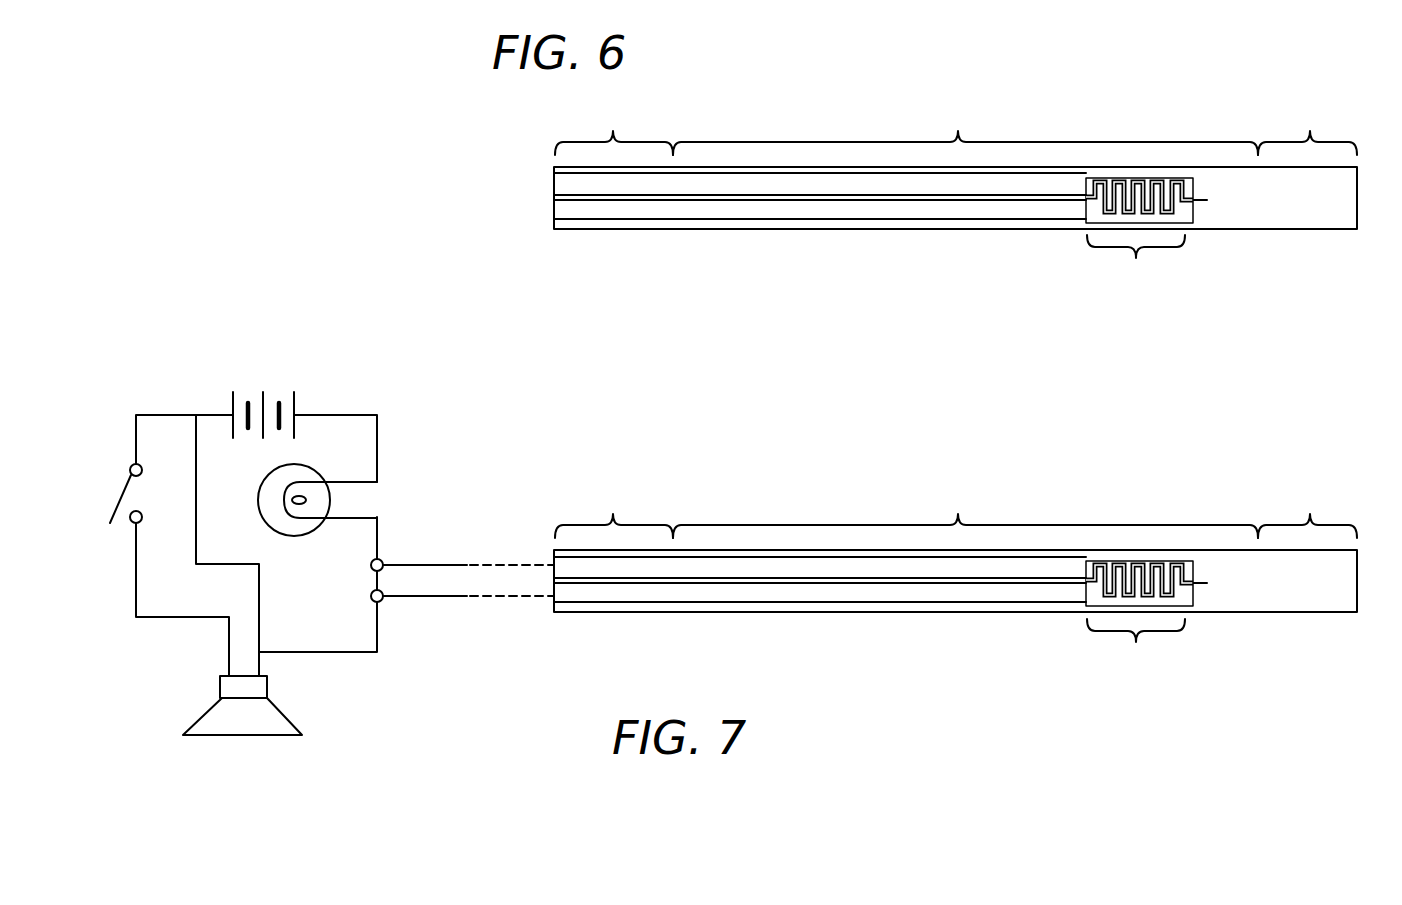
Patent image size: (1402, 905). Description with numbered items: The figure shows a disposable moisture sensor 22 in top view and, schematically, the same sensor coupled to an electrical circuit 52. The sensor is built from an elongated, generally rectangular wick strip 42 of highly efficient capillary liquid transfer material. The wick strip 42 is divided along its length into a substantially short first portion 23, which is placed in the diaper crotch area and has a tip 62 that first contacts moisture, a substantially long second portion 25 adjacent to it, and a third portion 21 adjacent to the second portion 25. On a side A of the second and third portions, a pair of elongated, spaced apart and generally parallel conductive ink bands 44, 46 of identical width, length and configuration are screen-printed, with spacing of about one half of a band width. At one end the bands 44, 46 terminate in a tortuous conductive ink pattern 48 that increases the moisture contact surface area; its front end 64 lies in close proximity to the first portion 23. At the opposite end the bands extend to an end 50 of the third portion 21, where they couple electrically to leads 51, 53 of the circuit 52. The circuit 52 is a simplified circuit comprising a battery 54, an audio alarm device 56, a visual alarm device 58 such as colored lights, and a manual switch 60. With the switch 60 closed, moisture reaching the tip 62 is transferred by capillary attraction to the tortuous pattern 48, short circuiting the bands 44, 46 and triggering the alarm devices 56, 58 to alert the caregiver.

In FIG. 6, the third portion 21 is at (614, 127).
In FIG. 7, the third portion 21 is at (614, 510).
In FIG. 6, the disposable moisture sensor 22 is at (1047, 108).
In FIG. 7, the disposable moisture sensor 22 is at (1046, 486).
In FIG. 6, the first portion 23 is at (1307, 128).
In FIG. 7, the first portion 23 is at (1307, 510).
In FIG. 6, the second portion 25 is at (965, 127).
In FIG. 7, the second portion 25 is at (965, 509).
In FIG. 6, the wick strip 42 is at (972, 250).
In FIG. 7, the wick strip 42 is at (920, 660).
In FIG. 6, the conductive ink band 44 is at (793, 168).
In FIG. 7, the conductive ink band 44 is at (798, 551).
In FIG. 6, the conductive ink band 46 is at (860, 210).
In FIG. 7, the conductive ink band 46 is at (860, 593).
In FIG. 6, the tortuous conductive ink pattern 48 is at (1139, 238).
In FIG. 7, the tortuous conductive ink pattern 48 is at (1139, 621).
In FIG. 6, the end 50 is at (554, 210).
In FIG. 7, the end 50 is at (553, 590).
In FIG. 7, the lead 51 is at (426, 562).
In FIG. 7, the electrical circuit 52 is at (195, 367).
In FIG. 7, the lead 53 is at (425, 600).
In FIG. 7, the battery 54 is at (270, 385).
In FIG. 7, the audio alarm device 56 is at (270, 688).
In FIG. 7, the visual alarm device 58 is at (316, 469).
In FIG. 7, the manual switch 60 is at (128, 497).
In FIG. 6, the tip 62 is at (1357, 198).
In FIG. 7, the tip 62 is at (1357, 581).
In FIG. 6, the front end 64 is at (1207, 200).
In FIG. 7, the front end 64 is at (1207, 583).
In FIG. 6, the side A is at (631, 231).
In FIG. 7, the side A is at (689, 614).